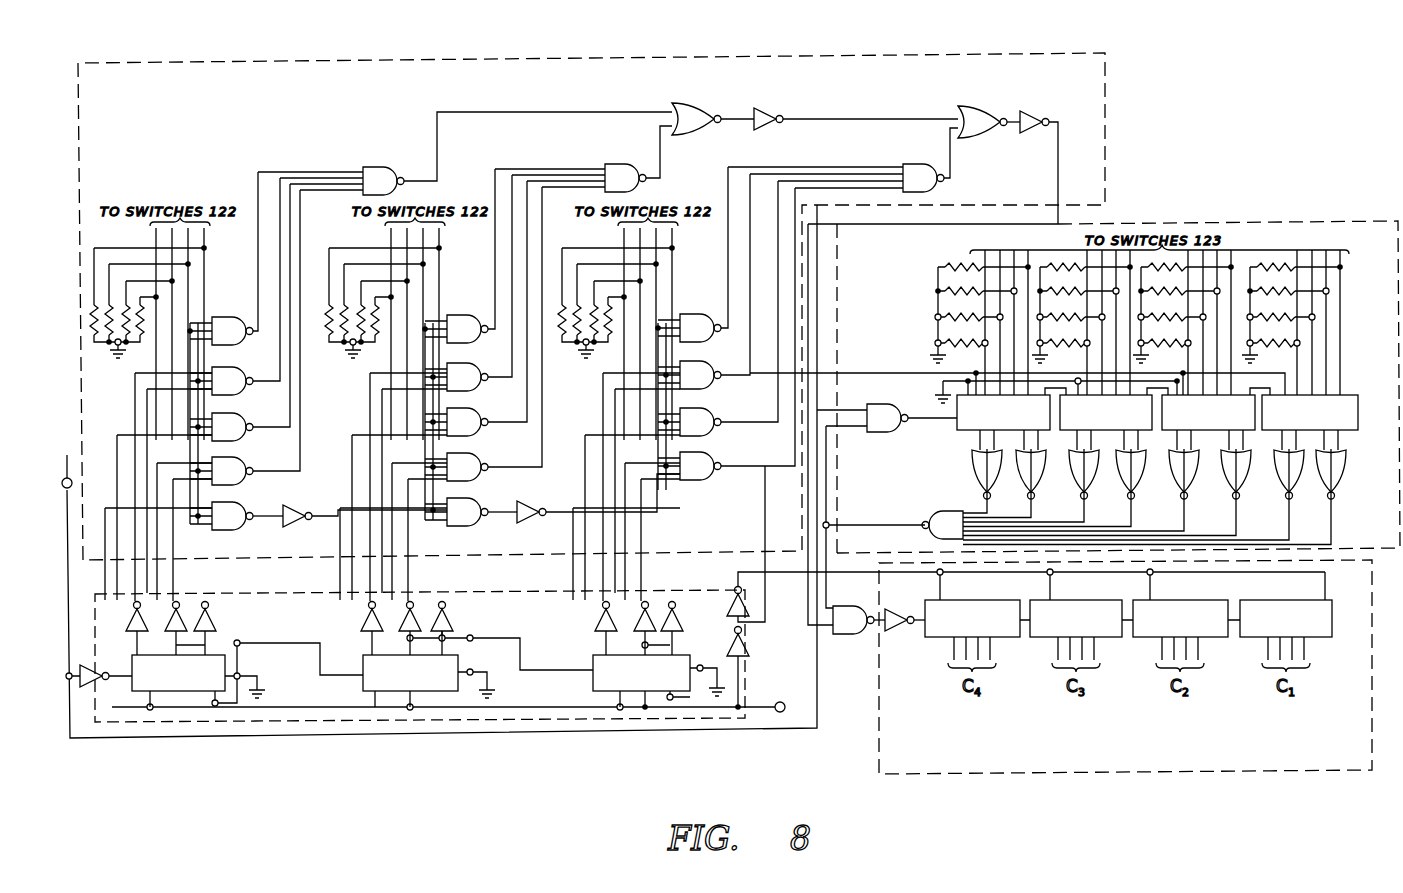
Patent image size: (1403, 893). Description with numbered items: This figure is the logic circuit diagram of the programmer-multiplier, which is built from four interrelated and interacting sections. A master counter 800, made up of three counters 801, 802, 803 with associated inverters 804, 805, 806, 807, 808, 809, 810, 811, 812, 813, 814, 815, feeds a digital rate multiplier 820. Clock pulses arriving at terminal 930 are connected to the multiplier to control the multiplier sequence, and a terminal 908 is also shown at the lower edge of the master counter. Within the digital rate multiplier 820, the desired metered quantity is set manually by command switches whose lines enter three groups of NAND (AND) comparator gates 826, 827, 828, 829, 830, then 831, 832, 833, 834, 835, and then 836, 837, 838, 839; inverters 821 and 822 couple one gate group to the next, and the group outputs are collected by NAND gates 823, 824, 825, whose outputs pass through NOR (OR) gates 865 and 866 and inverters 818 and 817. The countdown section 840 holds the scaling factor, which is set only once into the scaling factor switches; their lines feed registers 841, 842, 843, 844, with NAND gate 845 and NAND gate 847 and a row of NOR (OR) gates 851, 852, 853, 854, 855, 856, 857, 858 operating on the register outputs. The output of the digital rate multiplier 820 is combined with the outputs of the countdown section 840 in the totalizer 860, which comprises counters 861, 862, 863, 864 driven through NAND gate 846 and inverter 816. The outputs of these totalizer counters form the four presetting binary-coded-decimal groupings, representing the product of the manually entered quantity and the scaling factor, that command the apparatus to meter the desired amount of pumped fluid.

The master counter 800 is at (303, 740).
The counter 801 is at (247, 673).
The counter 802 is at (478, 669).
The counter 803 is at (659, 674).
The inverter 804 is at (123, 610).
The inverter 805 is at (186, 603).
The inverter 806 is at (216, 619).
The inverter 807 is at (362, 615).
The inverter 808 is at (410, 605).
The inverter 809 is at (452, 618).
The inverter 810 is at (596, 606).
The inverter 811 is at (640, 598).
The inverter 812 is at (680, 612).
The inverter 813 is at (736, 590).
The inverter 814 is at (748, 642).
The inverter 815 is at (79, 671).
The inverter 816 is at (895, 640).
The inverter 817 is at (1036, 104).
The inverter 818 is at (775, 112).
The digital rate multiplier 820 is at (642, 54).
The inverter 821 is at (298, 525).
The inverter 822 is at (538, 522).
The NAND gate 823 is at (371, 168).
The NAND gate 824 is at (632, 168).
The NAND gate 825 is at (920, 166).
The NAND gate 826 is at (222, 320).
The NAND gate 827 is at (244, 368).
The NAND gate 828 is at (246, 415).
The NAND gate 829 is at (256, 463).
The NAND gate 830 is at (258, 507).
The NAND gate 831 is at (458, 318).
The NAND gate 832 is at (476, 365).
The NAND gate 833 is at (488, 411).
The NAND gate 834 is at (497, 459).
The NAND gate 835 is at (487, 504).
The NAND gate 836 is at (688, 315).
The NAND gate 837 is at (716, 363).
The NAND gate 838 is at (716, 414).
The NAND gate 839 is at (722, 458).
The countdown section 840 is at (1290, 222).
The register 841 is at (1003, 412).
The register 842 is at (1106, 412).
The register 843 is at (1208, 412).
The register 844 is at (1310, 412).
The NAND gate 845 is at (880, 404).
The NAND gate 846 is at (850, 642).
The NAND gate 847 is at (946, 509).
The NOR gate 851 is at (969, 460).
The NOR gate 852 is at (1026, 488).
The NOR gate 853 is at (1079, 490).
The NOR gate 854 is at (1126, 494).
The NOR gate 855 is at (1180, 488).
The NOR gate 856 is at (1232, 490).
The NOR gate 857 is at (1283, 490).
The NOR gate 858 is at (1328, 490).
The totalizer 860 is at (1210, 774).
The counter 861 is at (972, 636).
The counter 862 is at (1076, 636).
The counter 863 is at (1180, 636).
The counter 864 is at (1286, 636).
The NOR gate 865 is at (698, 104).
The NOR gate 866 is at (970, 106).
The terminal 908 is at (781, 713).
The terminal 930 is at (52, 461).